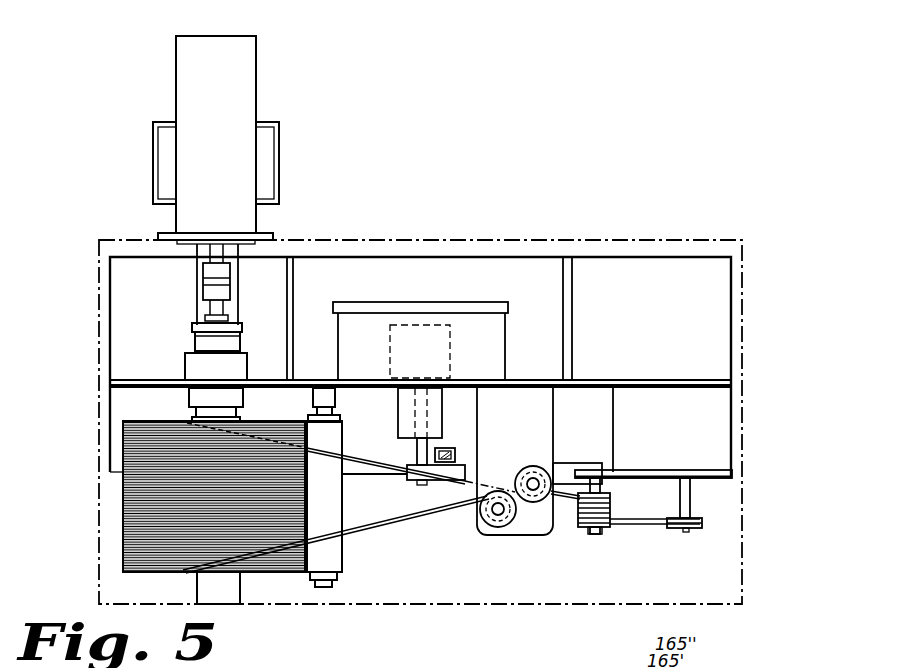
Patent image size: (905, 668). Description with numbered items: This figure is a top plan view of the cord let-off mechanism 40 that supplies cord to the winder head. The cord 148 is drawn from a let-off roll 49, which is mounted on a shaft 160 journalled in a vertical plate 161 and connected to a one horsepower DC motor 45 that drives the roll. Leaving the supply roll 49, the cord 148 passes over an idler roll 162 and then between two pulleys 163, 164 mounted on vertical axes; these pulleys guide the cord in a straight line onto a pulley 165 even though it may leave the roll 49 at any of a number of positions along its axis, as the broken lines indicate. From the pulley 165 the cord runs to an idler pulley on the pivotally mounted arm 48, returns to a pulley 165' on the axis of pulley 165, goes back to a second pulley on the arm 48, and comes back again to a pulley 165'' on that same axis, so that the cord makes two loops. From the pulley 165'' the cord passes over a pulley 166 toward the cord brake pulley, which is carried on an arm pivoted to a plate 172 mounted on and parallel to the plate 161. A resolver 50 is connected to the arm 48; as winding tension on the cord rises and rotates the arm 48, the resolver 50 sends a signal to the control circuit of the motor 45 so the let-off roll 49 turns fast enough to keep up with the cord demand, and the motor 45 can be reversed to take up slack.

The tape handling apparatus 40 is at (766, 207).
The motor 45 is at (238, 90).
The arm 48 is at (407, 479).
The let-off roll 49 is at (123, 510).
The resolver 50 is at (443, 354).
The cord 148 is at (413, 520).
The shaft 160 is at (220, 592).
The vertical plate 161 is at (728, 383).
The idler roll 162 is at (343, 553).
The pulley 163 is at (500, 527).
The pulley 164 is at (543, 450).
The pulley 165 is at (618, 506).
The pulley 165' is at (655, 538).
The pulley 165'' is at (612, 555).
The pulley 166 is at (700, 528).
The plate 172 is at (720, 470).